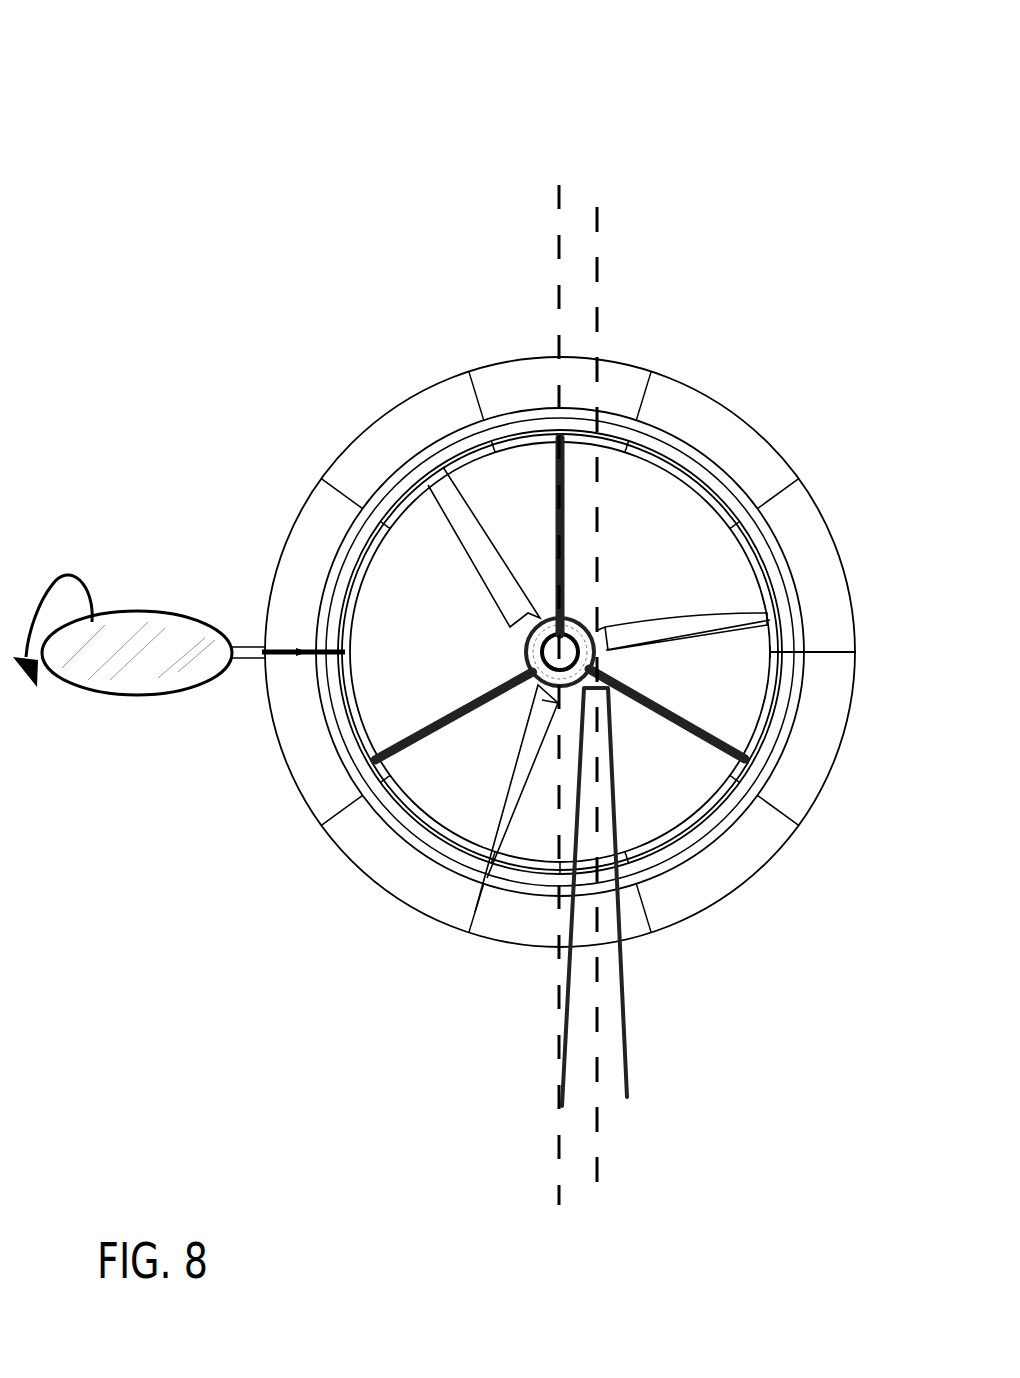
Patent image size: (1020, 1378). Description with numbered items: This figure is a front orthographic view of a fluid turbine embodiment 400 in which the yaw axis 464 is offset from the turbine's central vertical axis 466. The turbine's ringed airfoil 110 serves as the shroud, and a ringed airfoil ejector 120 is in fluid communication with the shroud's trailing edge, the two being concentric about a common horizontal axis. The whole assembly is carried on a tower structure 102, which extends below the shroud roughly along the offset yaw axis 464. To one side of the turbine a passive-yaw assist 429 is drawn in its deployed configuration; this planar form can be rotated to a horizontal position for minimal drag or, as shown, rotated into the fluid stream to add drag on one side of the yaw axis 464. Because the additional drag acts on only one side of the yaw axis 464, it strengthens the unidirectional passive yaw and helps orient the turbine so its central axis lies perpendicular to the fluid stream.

The wheel assembly 400 is at (118, 55).
The ringed airfoil ejector 120 is at (620, 378).
The ringed airfoil 110 is at (272, 868).
The tower structure 102 is at (610, 993).
The central vertical axis 466 is at (557, 185).
The yaw axis 464 is at (598, 1123).
The passive-yaw assist 429 is at (128, 670).